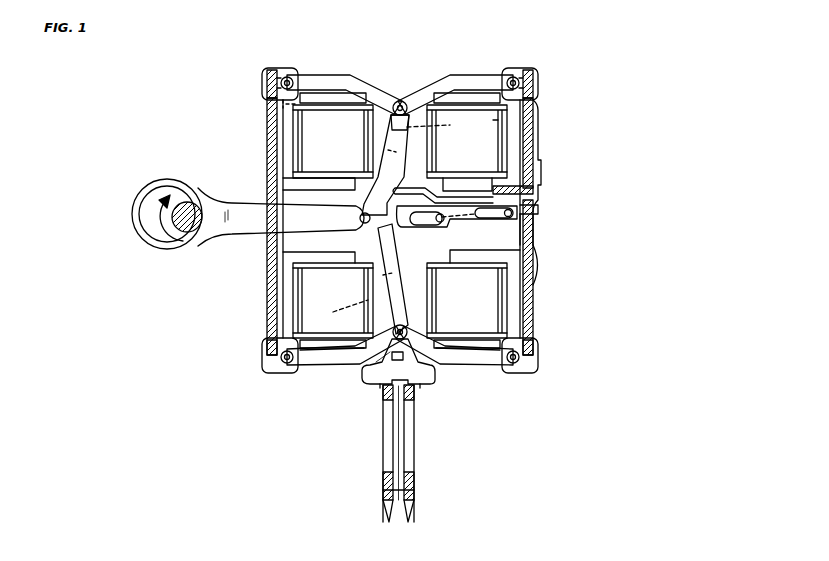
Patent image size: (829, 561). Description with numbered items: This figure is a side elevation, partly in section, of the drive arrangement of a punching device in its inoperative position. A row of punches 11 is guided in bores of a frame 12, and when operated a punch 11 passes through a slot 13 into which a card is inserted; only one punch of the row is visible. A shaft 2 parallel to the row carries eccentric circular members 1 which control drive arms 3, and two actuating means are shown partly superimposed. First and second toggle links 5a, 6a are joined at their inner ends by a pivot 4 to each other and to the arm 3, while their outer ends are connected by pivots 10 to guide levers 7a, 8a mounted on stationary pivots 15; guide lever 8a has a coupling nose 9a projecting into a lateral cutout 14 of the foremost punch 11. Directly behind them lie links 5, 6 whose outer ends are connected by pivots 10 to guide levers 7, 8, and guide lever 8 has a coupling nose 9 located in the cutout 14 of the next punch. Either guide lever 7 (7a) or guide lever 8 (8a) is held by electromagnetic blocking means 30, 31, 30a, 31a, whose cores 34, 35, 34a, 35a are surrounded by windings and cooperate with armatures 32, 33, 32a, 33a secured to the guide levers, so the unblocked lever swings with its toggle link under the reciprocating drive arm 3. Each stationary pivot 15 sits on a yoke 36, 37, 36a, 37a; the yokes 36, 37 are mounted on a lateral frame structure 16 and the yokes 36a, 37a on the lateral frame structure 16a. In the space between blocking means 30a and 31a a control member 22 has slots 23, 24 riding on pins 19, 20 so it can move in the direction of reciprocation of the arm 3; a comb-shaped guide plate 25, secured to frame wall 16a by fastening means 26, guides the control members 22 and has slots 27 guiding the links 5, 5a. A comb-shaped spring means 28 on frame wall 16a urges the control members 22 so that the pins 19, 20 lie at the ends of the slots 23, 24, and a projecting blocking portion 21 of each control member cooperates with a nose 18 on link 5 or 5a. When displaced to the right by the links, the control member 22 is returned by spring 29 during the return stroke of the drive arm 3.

The eccentric circular member 1 is at (148, 236).
The shaft 2 is at (186, 233).
The drive arm 3 is at (218, 205).
The pivot 4 is at (360, 223).
The toggle link 5 is at (433, 125).
The first toggle link 5a is at (405, 127).
The toggle link 6 is at (344, 309).
The second toggle link 6a is at (386, 326).
The guide lever 7 is at (336, 80).
The guide lever 7a is at (478, 92).
The guide lever 8 is at (322, 367).
The guide lever 8a is at (470, 368).
The coupling nose 9 is at (380, 382).
The coupling nose 9a is at (388, 388).
The pivot 10 is at (401, 100).
The punch 11 is at (396, 463).
The frame 12 is at (409, 456).
The slot 13 is at (385, 490).
The lateral cutout 14 is at (418, 382).
The stationary pivot 15 is at (287, 76).
The lateral frame structure 16 is at (272, 130).
The lateral frame structure 16a is at (531, 135).
The nose 18 is at (374, 250).
The pin 19 is at (444, 222).
The pin 20 is at (534, 210).
The projecting blocking portion 21 is at (408, 190).
The control member 22 is at (490, 218).
The slot 23 is at (418, 226).
The slot 24 is at (482, 185).
The comb-shaped guide plate 25 is at (440, 188).
The fastening means 26 is at (537, 191).
The slot 27 is at (361, 178).
The comb-shaped spring means 28 is at (536, 276).
The spring 29 is at (534, 228).
The electromagnetic blocking means 30 is at (302, 158).
The electromagnetic blocking means 30a is at (500, 120).
The electromagnetic blocking means 31 is at (299, 286).
The electromagnetic blocking means 31a is at (500, 330).
The armature 32 is at (350, 93).
The armature 32a is at (454, 93).
The armature 33 is at (306, 360).
The armature 33a is at (450, 365).
The core 34 is at (310, 97).
The core 34a is at (497, 97).
The core 35 is at (341, 362).
The core 35a is at (488, 366).
The yoke 36 is at (283, 105).
The yoke 36a is at (515, 160).
The yoke 37 is at (277, 316).
The yoke 37a is at (515, 302).